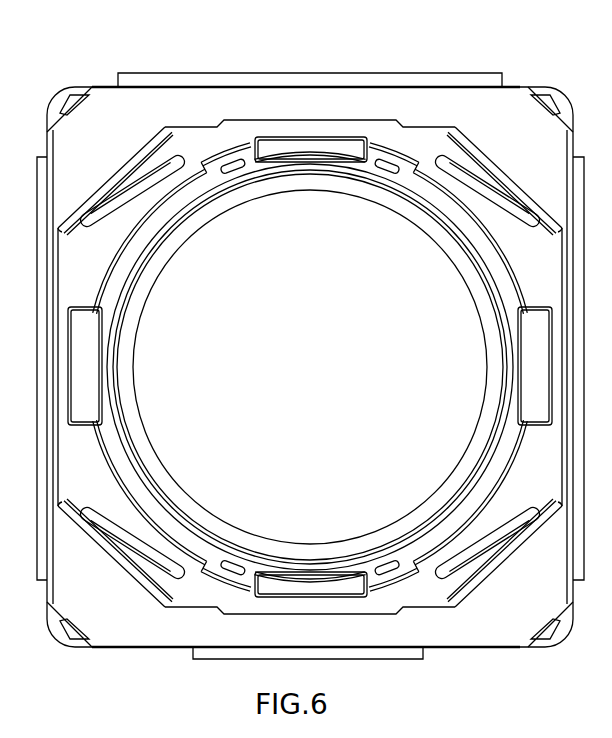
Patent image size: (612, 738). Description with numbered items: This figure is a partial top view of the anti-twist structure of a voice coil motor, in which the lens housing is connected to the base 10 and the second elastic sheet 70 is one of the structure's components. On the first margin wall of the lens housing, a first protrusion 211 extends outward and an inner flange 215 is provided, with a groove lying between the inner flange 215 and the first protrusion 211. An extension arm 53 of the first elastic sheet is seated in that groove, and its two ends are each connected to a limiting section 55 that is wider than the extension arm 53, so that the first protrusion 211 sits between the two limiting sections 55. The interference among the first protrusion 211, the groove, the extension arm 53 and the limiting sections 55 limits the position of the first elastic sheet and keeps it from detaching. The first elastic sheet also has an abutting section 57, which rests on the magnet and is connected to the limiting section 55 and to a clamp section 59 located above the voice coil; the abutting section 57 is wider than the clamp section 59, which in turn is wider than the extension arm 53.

The second elastic sheet 70 is at (557, 100).
The base 10 is at (440, 80).
The clamp section 59 is at (275, 103).
The abutting section 57 is at (510, 128).
The first protrusion 211 is at (330, 145).
The limiting section 55 is at (378, 172).
The extension arm 53 is at (320, 170).
The inner flange 215 is at (263, 188).